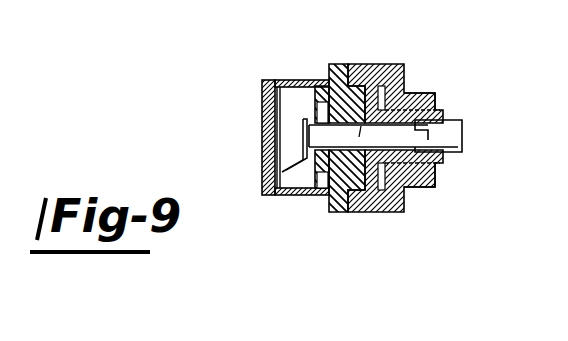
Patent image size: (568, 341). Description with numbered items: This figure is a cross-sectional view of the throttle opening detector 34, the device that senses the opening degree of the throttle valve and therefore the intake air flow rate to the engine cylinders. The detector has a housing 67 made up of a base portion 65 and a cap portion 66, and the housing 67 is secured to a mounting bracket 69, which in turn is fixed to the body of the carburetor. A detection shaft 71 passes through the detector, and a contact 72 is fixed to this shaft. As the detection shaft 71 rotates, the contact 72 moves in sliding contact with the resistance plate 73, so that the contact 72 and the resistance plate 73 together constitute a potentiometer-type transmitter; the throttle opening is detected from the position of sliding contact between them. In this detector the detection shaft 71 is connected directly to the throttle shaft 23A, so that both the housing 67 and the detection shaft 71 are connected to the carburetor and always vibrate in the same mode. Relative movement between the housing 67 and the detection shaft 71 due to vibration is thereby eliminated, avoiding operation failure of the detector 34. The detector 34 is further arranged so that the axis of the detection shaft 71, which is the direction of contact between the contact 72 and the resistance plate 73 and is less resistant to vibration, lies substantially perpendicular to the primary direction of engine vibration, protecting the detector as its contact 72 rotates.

The throttle shaft 23A is at (424, 141).
The throttle opening detector 34 is at (286, 198).
The base portion 65 is at (337, 64).
The cap portion 66 is at (262, 103).
The housing 67 is at (302, 82).
The mounting bracket 69 is at (403, 66).
The detection shaft 71 is at (369, 64).
The contact 72 is at (284, 168).
The resistance plate 73 is at (277, 155).